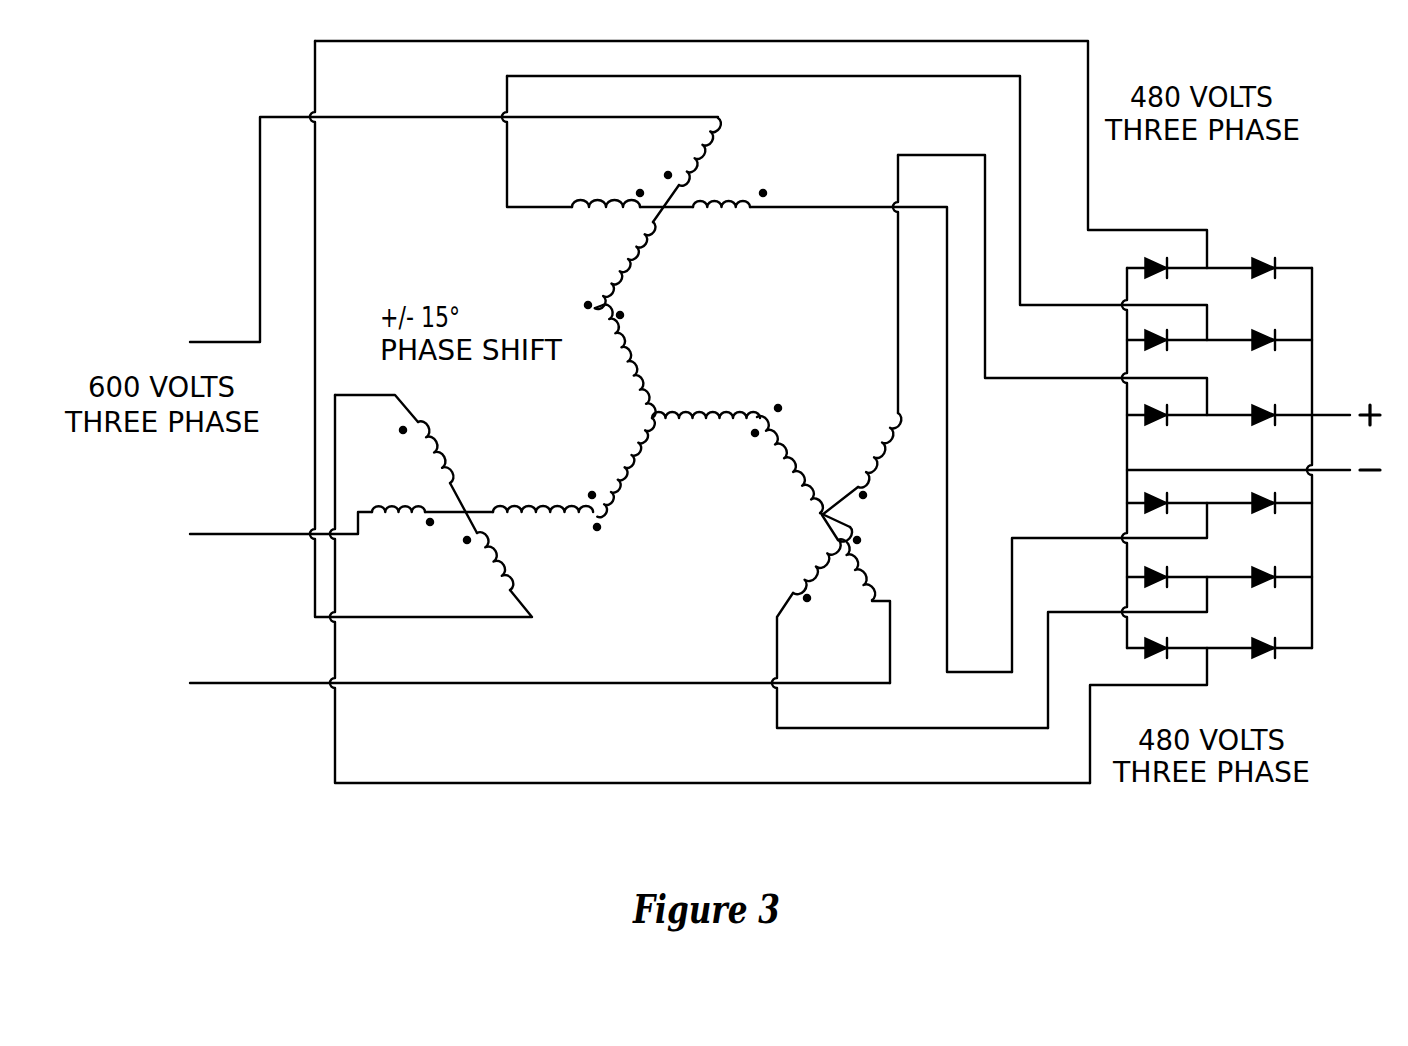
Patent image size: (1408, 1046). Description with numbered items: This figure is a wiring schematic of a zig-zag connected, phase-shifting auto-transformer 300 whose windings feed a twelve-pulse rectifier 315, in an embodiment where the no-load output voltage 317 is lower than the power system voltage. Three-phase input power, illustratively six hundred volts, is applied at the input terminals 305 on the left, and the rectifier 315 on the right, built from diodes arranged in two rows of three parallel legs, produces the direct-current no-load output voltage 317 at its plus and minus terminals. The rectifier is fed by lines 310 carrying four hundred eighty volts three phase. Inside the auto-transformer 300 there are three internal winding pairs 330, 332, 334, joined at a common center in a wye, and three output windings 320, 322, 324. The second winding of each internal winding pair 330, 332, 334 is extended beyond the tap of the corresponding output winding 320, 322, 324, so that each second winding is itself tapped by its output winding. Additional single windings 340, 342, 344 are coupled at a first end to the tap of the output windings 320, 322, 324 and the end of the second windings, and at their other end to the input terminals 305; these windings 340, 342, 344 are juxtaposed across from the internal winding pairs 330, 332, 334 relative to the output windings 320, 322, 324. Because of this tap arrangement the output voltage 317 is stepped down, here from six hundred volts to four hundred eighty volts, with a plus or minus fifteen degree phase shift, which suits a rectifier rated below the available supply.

The zig-zag connected phase-shifting auto-transformer 300 is at (165, 160).
The input terminals 305 is at (217, 336).
The 480 volt three phase output lines 310 is at (1147, 229).
The twelve-pulse rectifier 315 is at (1260, 250).
The no-load output voltage 317 is at (1365, 394).
The output winding 320 is at (748, 188).
The output winding 322 is at (877, 478).
The output winding 324 is at (436, 448).
The internal winding pair 330 is at (640, 278).
The internal winding pair 332 is at (815, 465).
The internal winding pair 334 is at (557, 505).
The additional winding 340 is at (686, 158).
The additional winding 342 is at (850, 553).
The additional winding 344 is at (380, 508).